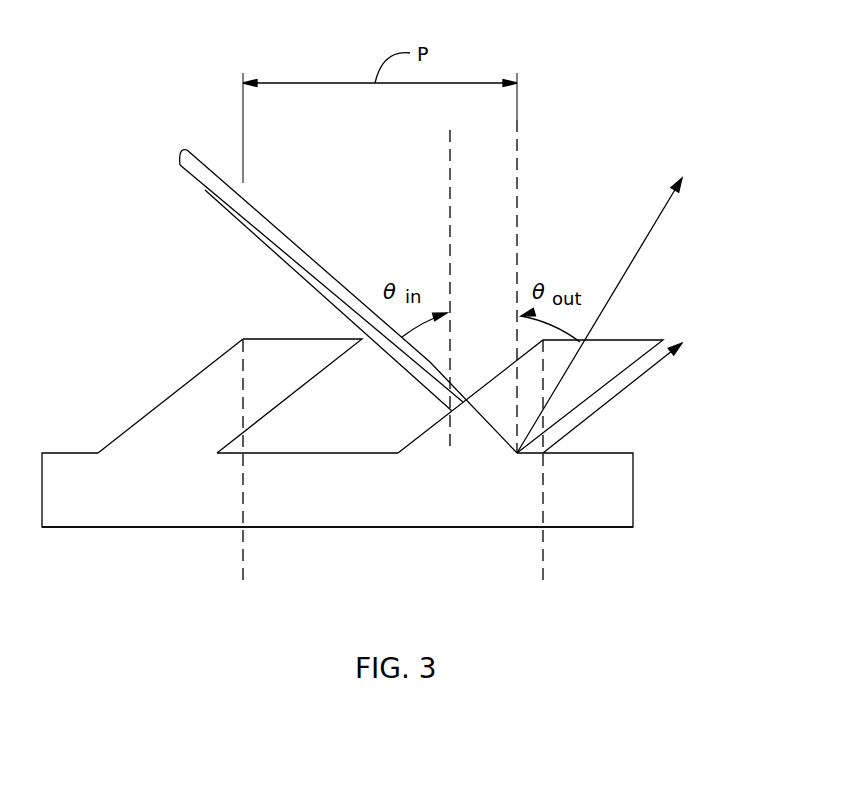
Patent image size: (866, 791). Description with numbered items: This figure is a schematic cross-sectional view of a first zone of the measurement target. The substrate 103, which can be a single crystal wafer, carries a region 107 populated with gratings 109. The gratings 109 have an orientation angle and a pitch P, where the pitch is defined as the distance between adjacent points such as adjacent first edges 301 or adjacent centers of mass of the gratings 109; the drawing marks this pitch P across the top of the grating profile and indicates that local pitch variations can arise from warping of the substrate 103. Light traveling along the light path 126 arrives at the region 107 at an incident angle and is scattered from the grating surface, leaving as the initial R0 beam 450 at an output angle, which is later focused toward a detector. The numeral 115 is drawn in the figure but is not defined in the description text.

The substrate 103 is at (635, 488).
The region 107 is at (570, 528).
The grating 109 is at (148, 412).
The first edge 301 is at (281, 380).
The light path 126 is at (348, 301).
The output light 115 is at (738, 102).
The initial R0 beam 450 is at (639, 390).